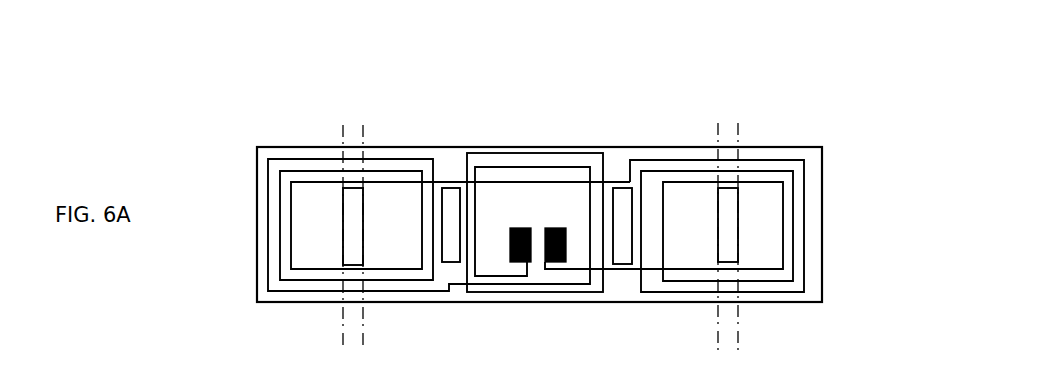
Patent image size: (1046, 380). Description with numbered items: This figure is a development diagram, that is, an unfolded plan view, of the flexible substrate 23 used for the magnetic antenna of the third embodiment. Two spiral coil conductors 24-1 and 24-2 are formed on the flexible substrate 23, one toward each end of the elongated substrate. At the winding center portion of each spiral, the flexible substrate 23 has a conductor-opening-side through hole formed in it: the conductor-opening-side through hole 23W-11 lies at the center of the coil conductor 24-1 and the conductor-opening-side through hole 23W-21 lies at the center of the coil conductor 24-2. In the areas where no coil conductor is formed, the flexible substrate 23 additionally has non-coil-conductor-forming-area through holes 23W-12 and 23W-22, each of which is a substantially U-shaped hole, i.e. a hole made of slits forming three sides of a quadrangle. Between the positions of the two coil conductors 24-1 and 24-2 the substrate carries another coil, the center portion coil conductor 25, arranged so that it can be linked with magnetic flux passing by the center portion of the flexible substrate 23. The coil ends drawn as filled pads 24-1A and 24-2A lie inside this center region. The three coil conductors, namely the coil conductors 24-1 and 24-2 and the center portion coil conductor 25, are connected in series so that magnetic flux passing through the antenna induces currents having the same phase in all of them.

The flexible substrate 23 is at (815, 220).
The coil conductor 24-1 is at (277, 159).
The coil conductor 24-2 is at (797, 159).
The first coil terminal 24-1A is at (520, 228).
The second coil terminal 24-2A is at (553, 228).
The center portion coil conductor 25 is at (532, 153).
The conductor-opening-side through hole 23W-11 is at (354, 197).
The non-coil-conductor-forming-area through hole 23W-12 is at (450, 197).
The conductor-opening-side through hole 23W-21 is at (728, 198).
The non-coil-conductor-forming-area through hole 23W-22 is at (623, 197).